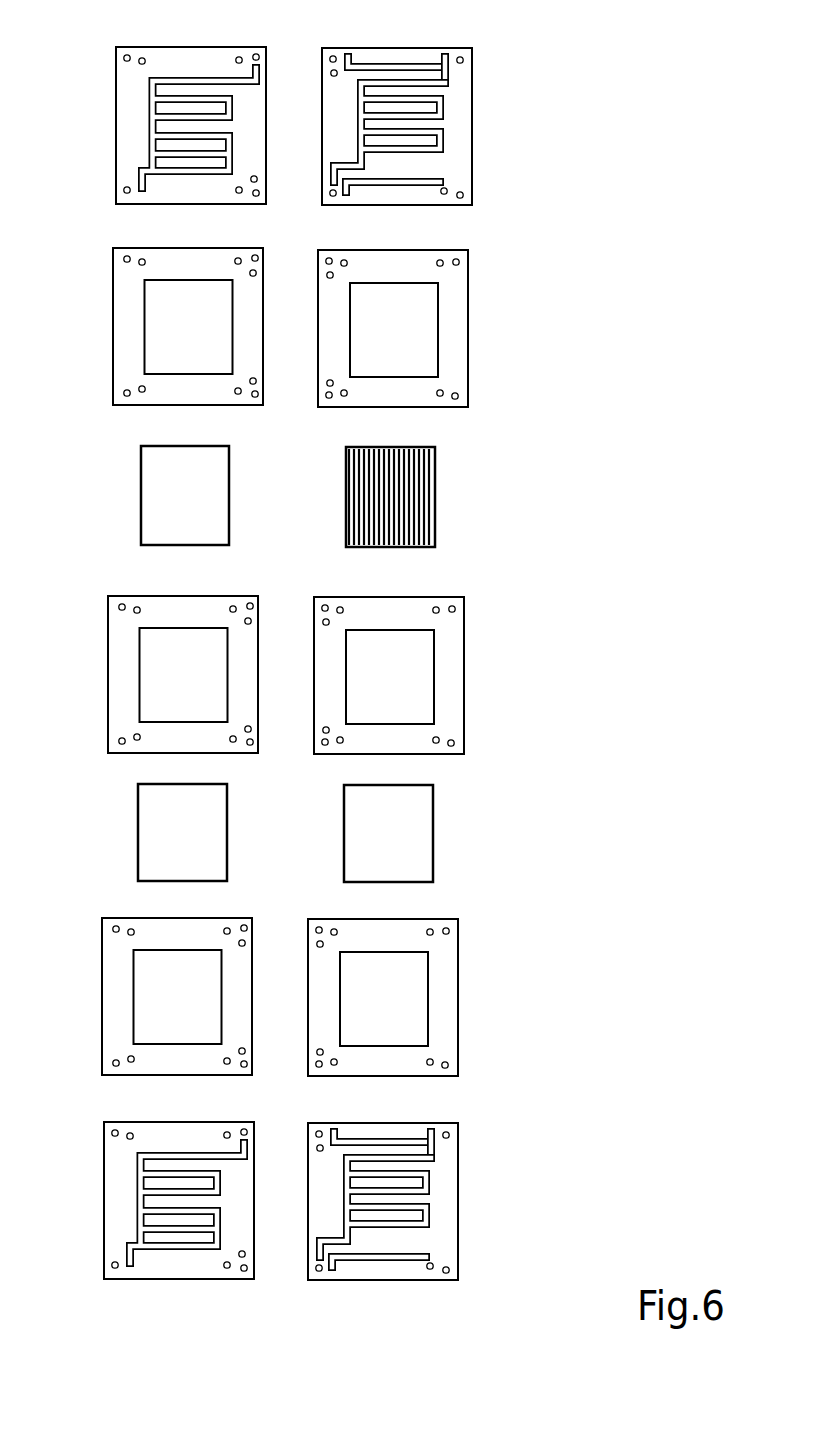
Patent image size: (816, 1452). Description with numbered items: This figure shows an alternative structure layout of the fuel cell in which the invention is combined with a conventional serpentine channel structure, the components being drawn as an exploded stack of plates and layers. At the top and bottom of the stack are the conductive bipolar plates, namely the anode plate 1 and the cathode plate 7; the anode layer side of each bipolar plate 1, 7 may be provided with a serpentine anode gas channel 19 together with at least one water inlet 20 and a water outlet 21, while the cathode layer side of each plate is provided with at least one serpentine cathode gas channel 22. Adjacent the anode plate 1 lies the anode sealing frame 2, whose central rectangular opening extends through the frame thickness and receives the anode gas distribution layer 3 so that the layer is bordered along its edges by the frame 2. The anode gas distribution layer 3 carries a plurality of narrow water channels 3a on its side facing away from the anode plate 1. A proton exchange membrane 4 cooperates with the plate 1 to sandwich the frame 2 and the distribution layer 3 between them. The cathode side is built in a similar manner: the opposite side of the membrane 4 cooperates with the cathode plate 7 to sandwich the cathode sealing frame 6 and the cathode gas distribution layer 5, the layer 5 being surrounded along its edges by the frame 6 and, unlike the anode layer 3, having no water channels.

The anode plate 1 is at (116, 118).
The anode sealing frame 2 is at (113, 322).
The anode gas distribution layer 3 is at (141, 496).
The water channels 3a is at (435, 498).
The proton exchange membrane 4 is at (108, 668).
The cathode gas distribution layer 5 is at (138, 832).
The cathode sealing frame 6 is at (127, 918).
The cathode plate 7 is at (190, 1281).
The anode gas channel 19 is at (448, 82).
The water inlet 20 is at (362, 67).
The water outlet 21 is at (392, 192).
The cathode gas channel 22 is at (172, 82).